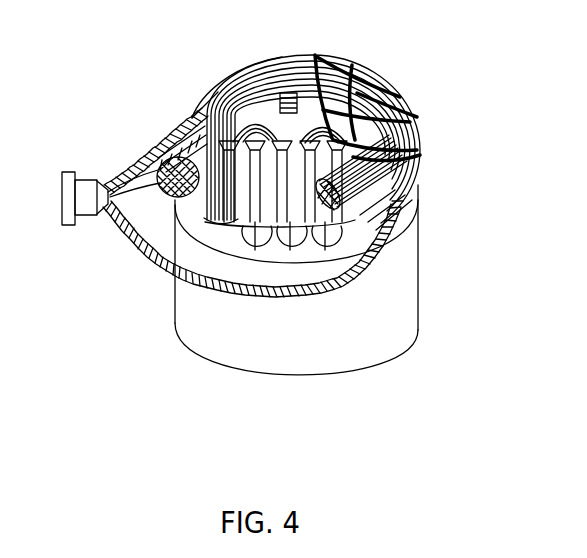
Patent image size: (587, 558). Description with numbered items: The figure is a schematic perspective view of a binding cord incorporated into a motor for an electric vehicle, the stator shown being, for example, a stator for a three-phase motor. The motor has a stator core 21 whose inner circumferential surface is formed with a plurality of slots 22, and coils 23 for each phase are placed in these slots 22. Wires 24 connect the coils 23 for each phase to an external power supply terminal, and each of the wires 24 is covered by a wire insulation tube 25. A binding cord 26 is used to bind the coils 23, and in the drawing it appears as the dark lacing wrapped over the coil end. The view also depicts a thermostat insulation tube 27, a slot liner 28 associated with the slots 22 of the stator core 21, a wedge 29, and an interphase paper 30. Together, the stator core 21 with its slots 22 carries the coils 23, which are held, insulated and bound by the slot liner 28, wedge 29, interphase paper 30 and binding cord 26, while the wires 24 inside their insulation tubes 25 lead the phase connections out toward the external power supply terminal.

The stator core 21 is at (418, 312).
The slots 22 is at (240, 258).
The coils 23 is at (418, 192).
The wires 24 is at (133, 250).
The wire insulation tubes 25 is at (110, 249).
The binding cord 26 is at (299, 57).
The thermostat insulation tube 27 is at (386, 75).
The slot liner 28 is at (341, 228).
The wedge 29 is at (345, 256).
The interphase paper 30 is at (205, 102).